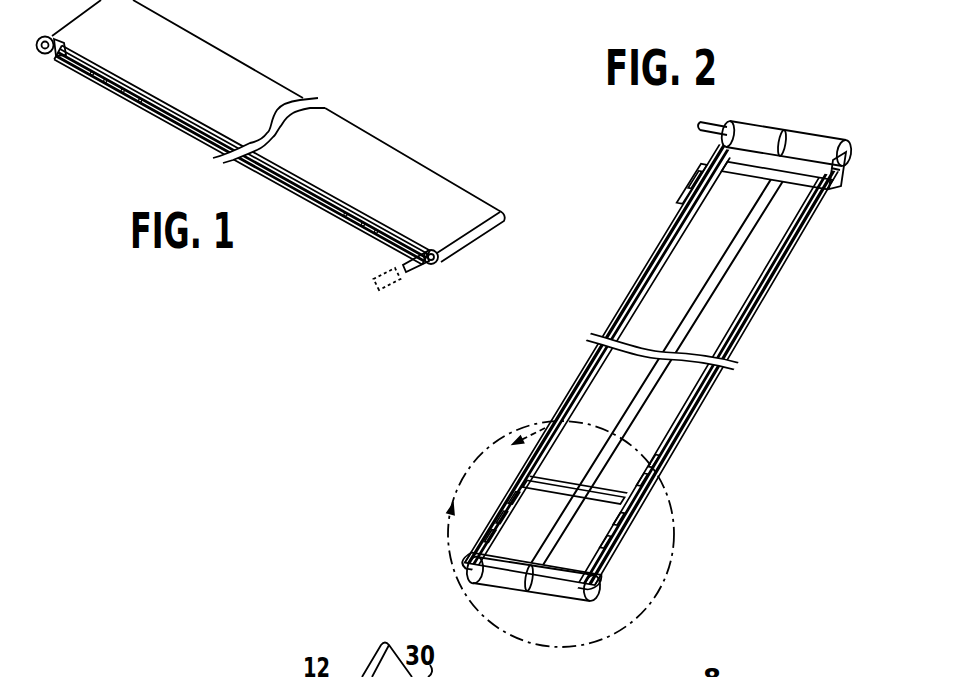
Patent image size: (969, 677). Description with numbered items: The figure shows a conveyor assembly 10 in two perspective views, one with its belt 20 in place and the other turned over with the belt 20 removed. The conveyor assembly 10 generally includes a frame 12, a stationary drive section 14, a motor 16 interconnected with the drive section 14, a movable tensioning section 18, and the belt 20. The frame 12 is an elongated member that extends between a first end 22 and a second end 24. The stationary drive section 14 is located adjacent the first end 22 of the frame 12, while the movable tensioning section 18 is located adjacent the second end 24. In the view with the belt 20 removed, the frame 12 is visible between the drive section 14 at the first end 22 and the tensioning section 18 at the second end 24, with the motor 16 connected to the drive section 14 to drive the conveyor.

In FIG. 1, the conveyor assembly 10 is at (261, 166).
In FIG. 2, the conveyor assembly 10 is at (653, 365).
In FIG. 1, the frame 12 is at (174, 114).
In FIG. 2, the frame 12 is at (699, 409).
In FIG. 1, the stationary drive section 14 is at (439, 264).
In FIG. 2, the stationary drive section 14 is at (770, 121).
In FIG. 1, the motor 16 is at (401, 286).
In FIG. 1, the movable tensioning section 18 is at (54, 61).
In FIG. 2, the movable tensioning section 18 is at (544, 603).
In FIG. 1, the belt 20 is at (193, 64).
In FIG. 2, the first end 22 is at (838, 178).
In FIG. 2, the second end 24 is at (614, 571).